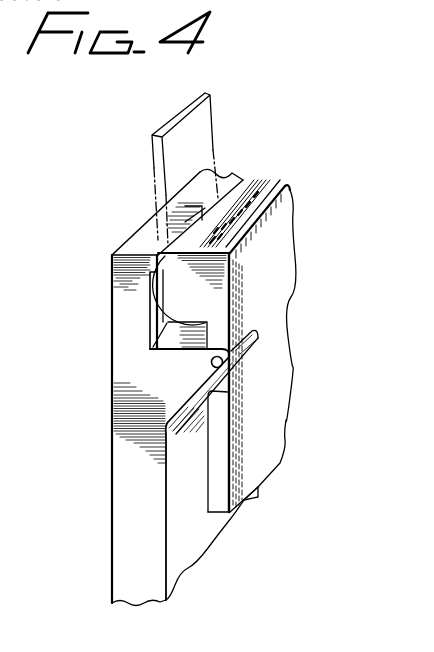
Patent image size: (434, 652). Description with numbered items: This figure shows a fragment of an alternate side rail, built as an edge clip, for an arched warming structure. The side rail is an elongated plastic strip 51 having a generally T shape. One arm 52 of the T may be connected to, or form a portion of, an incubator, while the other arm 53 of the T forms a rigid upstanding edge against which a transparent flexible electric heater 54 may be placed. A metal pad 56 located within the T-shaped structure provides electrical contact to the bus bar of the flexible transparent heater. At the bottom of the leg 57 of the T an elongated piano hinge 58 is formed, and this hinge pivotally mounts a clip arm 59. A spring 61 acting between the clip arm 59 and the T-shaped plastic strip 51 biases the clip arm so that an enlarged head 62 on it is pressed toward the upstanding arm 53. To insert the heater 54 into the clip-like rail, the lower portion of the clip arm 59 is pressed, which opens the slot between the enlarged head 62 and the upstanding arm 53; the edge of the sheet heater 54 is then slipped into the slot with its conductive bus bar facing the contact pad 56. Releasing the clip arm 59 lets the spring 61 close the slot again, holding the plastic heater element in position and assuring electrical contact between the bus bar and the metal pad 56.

The elongated plastic strip 51 is at (108, 443).
The arm of the T 52 is at (110, 579).
The upstanding arm of the T 53 is at (156, 246).
The transparent flexible electric heater 54 is at (215, 117).
The metal pad 56 is at (150, 302).
The leg of the T 57 is at (186, 362).
The piano hinge 58 is at (255, 353).
The clip arm 59 is at (270, 424).
The spring 61 is at (193, 404).
The enlarged head 62 is at (277, 190).